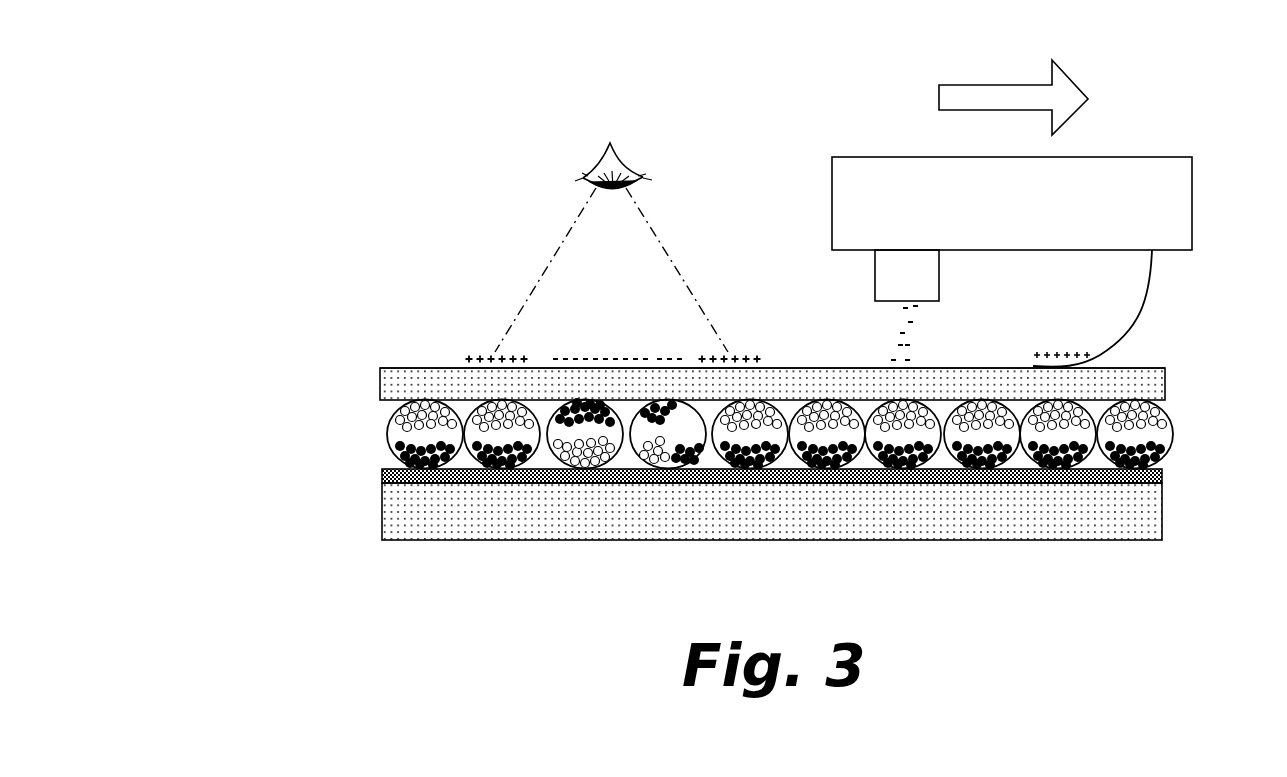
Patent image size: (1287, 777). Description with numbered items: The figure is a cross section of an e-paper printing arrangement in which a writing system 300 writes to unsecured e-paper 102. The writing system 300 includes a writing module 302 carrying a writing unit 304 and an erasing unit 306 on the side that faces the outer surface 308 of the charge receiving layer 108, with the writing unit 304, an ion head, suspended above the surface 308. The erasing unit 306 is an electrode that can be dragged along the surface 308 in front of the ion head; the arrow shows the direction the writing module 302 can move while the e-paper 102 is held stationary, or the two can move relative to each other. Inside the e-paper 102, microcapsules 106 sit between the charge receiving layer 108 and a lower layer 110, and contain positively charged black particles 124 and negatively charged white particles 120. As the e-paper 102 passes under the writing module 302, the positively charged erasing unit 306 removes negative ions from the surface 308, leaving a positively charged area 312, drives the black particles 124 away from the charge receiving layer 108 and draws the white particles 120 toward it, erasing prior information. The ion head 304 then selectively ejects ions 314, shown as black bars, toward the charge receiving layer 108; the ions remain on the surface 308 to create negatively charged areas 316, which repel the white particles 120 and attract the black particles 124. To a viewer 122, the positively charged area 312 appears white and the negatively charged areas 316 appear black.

The writing system 300 is at (313, 142).
The e-paper 102 is at (376, 365).
The microcapsules 106 is at (433, 465).
The charge receiving layer 108 is at (1160, 385).
The rear electrode layer 110 is at (1145, 482).
The white particles 120 is at (1163, 417).
The viewer 122 is at (617, 168).
The black particles 124 is at (1165, 452).
The writing module 302 is at (997, 209).
The writing unit 304 is at (887, 285).
The erasing unit 306 is at (1143, 287).
The outer surface 308 is at (1150, 367).
The positive surface charges 312 is at (1038, 352).
The ions 314 is at (881, 303).
The negatively charged areas 316 is at (647, 358).